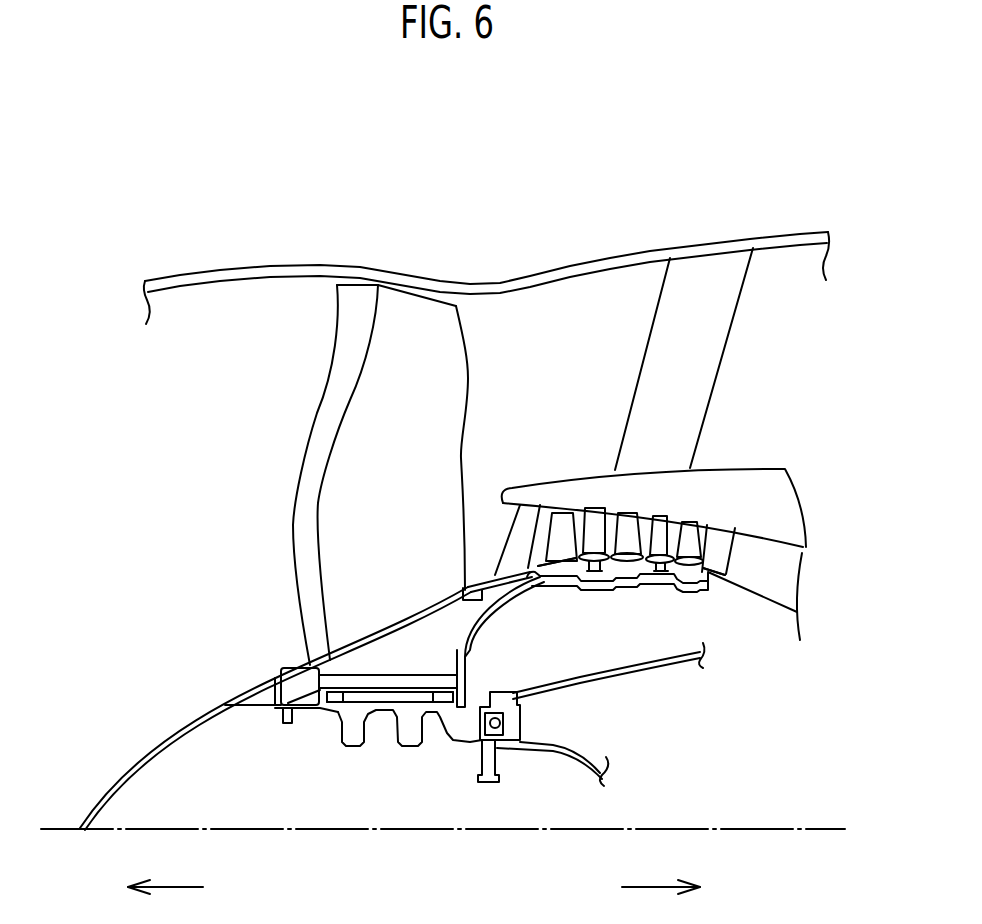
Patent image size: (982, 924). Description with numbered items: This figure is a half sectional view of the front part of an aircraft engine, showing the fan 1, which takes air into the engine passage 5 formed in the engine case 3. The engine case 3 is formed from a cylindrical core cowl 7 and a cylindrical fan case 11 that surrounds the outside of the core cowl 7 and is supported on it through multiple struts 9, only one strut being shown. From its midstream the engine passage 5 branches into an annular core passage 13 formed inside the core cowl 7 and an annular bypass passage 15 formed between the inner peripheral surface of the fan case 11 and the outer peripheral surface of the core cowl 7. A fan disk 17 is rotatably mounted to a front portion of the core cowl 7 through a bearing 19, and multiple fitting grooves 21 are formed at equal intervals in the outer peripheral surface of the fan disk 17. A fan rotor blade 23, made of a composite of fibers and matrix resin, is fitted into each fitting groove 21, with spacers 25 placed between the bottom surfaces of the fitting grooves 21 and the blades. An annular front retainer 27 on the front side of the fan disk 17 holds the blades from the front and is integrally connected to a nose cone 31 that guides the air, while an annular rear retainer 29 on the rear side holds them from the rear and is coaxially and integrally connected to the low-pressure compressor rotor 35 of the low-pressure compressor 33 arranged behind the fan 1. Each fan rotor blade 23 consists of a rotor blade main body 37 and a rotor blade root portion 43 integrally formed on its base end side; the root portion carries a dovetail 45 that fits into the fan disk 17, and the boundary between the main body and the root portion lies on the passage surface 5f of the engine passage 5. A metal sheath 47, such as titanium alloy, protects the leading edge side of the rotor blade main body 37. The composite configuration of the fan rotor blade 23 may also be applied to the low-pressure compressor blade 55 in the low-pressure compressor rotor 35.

The fan 1 is at (215, 473).
The engine case 3 is at (645, 250).
The engine passage 5 is at (220, 318).
The passage surface 5f is at (370, 625).
The core cowl 7 is at (758, 470).
The struts 9 is at (652, 334).
The fan case 11 is at (527, 272).
The core passage 13 is at (765, 588).
The bypass passage 15 is at (787, 282).
The fan disk 17 is at (353, 750).
The bearing 19 is at (505, 723).
The fitting grooves 21 is at (372, 699).
The fan rotor blade 23 is at (472, 377).
The spacers 25 is at (333, 697).
The front retainer 27 is at (300, 691).
The rear retainer 29 is at (465, 670).
The nose cone 31 is at (160, 754).
The low-pressure compressor 33 is at (663, 507).
The low-pressure compressor rotor 35 is at (560, 585).
The rotor blade main body 37 is at (464, 457).
The rotor blade root portion 43 is at (447, 629).
The dovetail 45 is at (393, 682).
The sheath 47 is at (316, 428).
The low-pressure compressor blade 55 is at (563, 522).